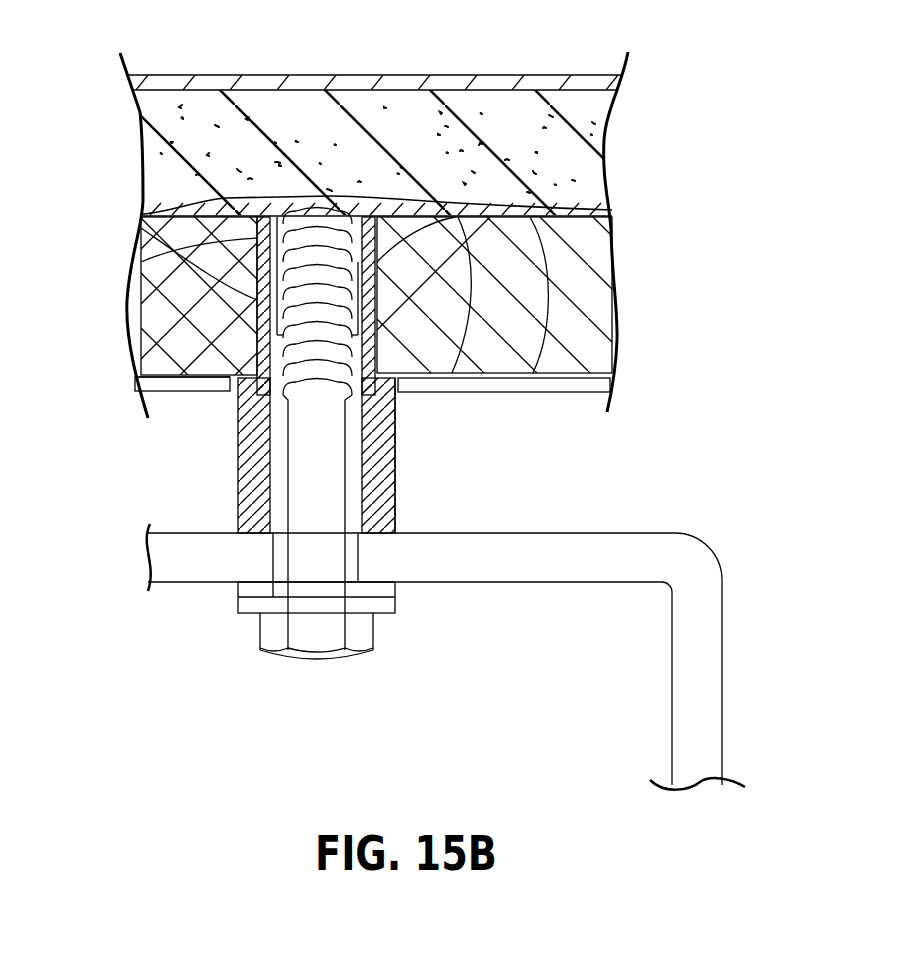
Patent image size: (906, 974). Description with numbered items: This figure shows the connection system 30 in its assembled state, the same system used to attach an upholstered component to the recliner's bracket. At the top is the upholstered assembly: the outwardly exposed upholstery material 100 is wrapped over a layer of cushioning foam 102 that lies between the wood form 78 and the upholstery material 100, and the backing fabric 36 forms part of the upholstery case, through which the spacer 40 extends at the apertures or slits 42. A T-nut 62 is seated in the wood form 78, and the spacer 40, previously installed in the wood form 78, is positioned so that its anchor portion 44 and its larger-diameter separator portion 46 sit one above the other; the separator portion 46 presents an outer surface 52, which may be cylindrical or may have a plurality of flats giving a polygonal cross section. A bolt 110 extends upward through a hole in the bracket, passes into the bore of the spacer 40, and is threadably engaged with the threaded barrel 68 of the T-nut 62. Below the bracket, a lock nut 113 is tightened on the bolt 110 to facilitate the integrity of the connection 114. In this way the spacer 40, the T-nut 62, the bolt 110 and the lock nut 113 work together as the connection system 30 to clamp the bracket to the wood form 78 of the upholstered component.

The connection system 30 is at (141, 698).
The backing fabric 36 is at (498, 392).
The spacer 40 is at (388, 468).
The apertures or slits 42 is at (240, 507).
The anchor portion 44 is at (257, 293).
The separator portion 46 is at (248, 435).
The separator portion outer surface 52 is at (393, 505).
The T-nut 62 is at (142, 206).
The barrel portion 68 is at (270, 388).
The wood form 78 is at (577, 270).
The upholstery material 100 is at (232, 75).
The cushioning foam 102 is at (359, 102).
The bolt 110 is at (330, 437).
The lock nut 113 is at (397, 588).
The connection 114 is at (221, 655).